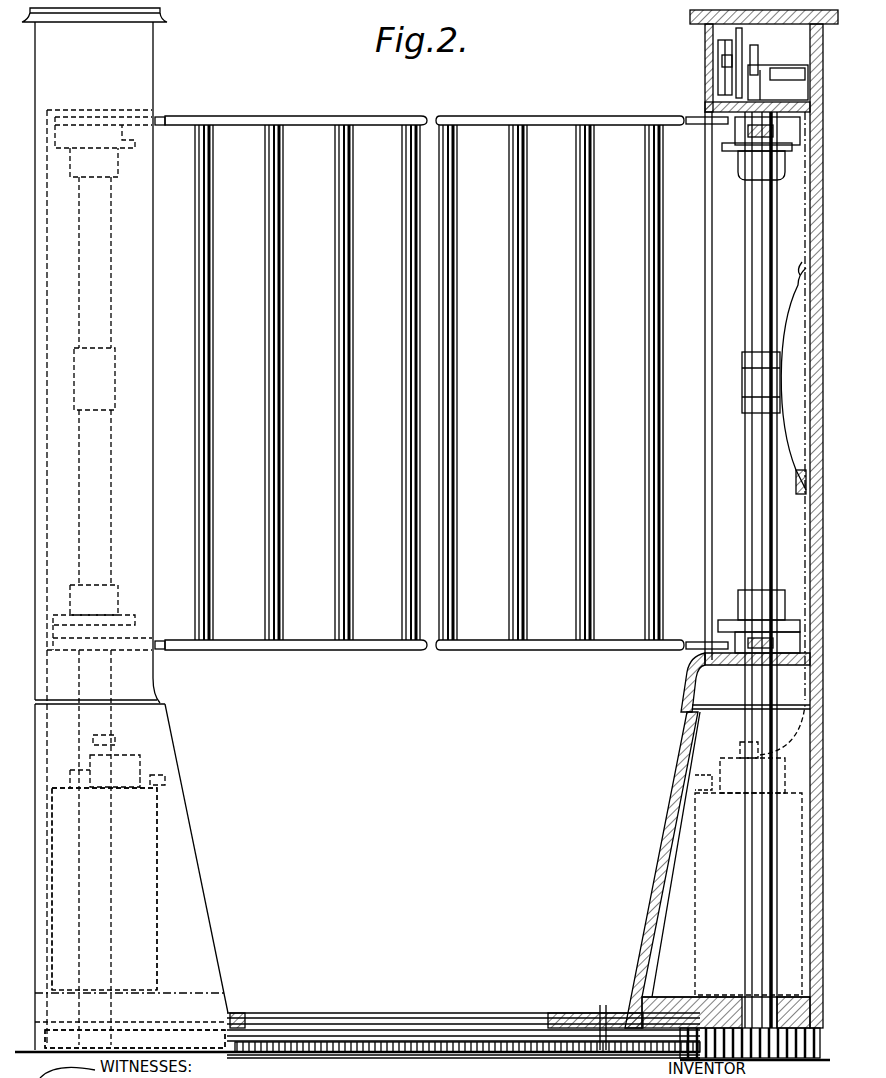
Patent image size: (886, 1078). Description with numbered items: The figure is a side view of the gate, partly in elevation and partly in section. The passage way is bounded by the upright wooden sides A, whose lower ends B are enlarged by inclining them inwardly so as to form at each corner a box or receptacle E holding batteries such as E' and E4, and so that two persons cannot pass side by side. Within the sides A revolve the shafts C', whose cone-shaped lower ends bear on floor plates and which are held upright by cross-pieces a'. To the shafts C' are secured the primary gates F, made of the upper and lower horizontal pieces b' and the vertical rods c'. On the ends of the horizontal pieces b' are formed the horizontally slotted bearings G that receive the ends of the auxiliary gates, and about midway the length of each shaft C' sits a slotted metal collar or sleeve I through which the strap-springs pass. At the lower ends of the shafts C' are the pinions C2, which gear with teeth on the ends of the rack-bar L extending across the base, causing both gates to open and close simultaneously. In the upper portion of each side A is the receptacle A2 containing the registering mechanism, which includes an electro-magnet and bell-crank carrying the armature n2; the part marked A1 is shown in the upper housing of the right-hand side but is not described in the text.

The sides of the gate or passage way A is at (36, 483).
The post top housing A1 is at (764, 355).
The receptacle A2 is at (94, 356).
The cross-pieces a' is at (743, 402).
The lower ends of the sides B is at (213, 931).
The horizontal pieces b' is at (419, 383).
The shafts C' is at (440, 570).
The vertical rods c' is at (485, 477).
The pinions C2 is at (792, 1052).
The box or receptacle E is at (422, 877).
The battery E' is at (104, 889).
The battery E4 is at (700, 947).
The primary gates F is at (429, 382).
The bearings G is at (786, 150).
The metal collars or sleeves I is at (742, 404).
The rack-bar L is at (640, 1062).
The armature n2 is at (770, 372).